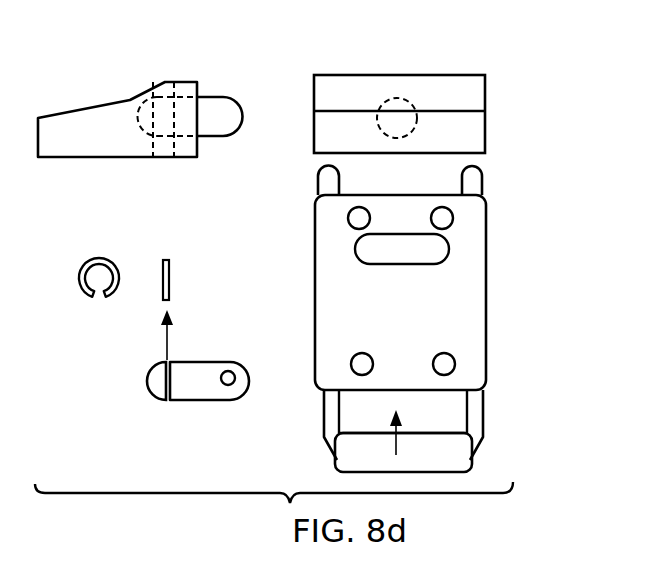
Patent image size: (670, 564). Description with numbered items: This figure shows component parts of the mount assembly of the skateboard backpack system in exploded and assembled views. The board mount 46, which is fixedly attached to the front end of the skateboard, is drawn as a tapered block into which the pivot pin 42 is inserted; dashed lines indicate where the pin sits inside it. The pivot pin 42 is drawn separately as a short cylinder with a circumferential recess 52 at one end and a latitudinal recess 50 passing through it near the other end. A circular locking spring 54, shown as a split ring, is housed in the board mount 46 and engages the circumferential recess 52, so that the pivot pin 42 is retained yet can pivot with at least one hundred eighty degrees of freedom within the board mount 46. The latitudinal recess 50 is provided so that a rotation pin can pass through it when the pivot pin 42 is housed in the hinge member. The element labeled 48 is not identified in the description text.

The pivot pin 42 is at (208, 92).
The board mount 46 is at (98, 103).
The housing body 48 is at (497, 408).
The latitudinal recess 50 is at (233, 368).
The circumferential recess 52 is at (165, 377).
The circular locking spring 54 is at (113, 258).